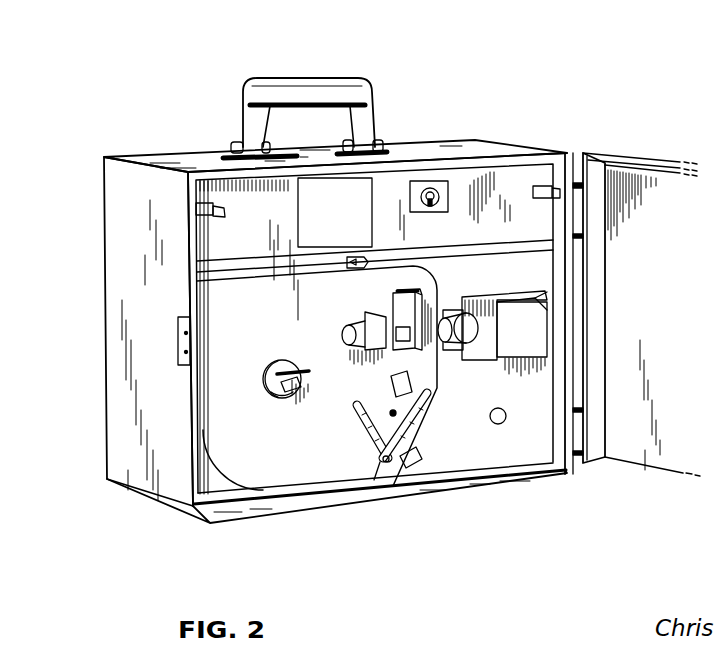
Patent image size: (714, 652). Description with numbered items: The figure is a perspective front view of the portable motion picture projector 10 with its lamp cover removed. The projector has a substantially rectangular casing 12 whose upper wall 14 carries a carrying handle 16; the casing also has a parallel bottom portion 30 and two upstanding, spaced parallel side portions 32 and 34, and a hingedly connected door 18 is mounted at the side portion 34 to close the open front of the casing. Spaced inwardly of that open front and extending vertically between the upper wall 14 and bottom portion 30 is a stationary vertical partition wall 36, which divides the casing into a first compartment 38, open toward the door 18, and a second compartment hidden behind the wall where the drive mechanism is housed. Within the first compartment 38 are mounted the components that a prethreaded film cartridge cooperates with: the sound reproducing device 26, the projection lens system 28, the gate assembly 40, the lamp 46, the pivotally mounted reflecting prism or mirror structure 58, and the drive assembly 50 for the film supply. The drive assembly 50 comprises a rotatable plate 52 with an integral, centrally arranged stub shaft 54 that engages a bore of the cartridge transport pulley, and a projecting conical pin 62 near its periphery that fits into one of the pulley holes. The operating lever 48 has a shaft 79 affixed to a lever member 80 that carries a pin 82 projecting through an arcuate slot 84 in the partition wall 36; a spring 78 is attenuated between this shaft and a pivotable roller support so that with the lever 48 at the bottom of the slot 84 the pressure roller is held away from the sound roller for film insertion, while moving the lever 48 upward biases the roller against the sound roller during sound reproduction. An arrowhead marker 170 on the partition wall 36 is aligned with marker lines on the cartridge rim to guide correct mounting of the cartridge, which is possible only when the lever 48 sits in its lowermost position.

The motion picture projector 10 is at (482, 111).
The casing 12 is at (120, 199).
The upper wall 14 is at (187, 160).
The carrying handle 16 is at (297, 92).
The door 18 is at (637, 180).
The sound reproducing device 26 is at (432, 420).
The projection lens system 28 is at (470, 313).
The bottom portion 30 is at (275, 498).
The side portion 32 is at (120, 368).
The side portion 34 is at (568, 152).
The vertical partition wall 36 is at (220, 239).
The first compartment 38 is at (233, 431).
The gate assembly 40 is at (417, 292).
The lamp 46 is at (362, 326).
The operating lever 48 is at (415, 470).
The drive assembly 50 is at (273, 362).
The rotatable plate 52 is at (262, 385).
The stub shaft 54 is at (281, 397).
The reflecting prism or mirror structure 58 is at (530, 343).
The conical pin 62 is at (303, 367).
The spring 78 is at (410, 441).
The shaft 79 is at (390, 464).
The lever member 80 is at (373, 458).
The pin 82 is at (377, 447).
The arcuate slot 84 is at (357, 405).
The marker 170 is at (366, 257).